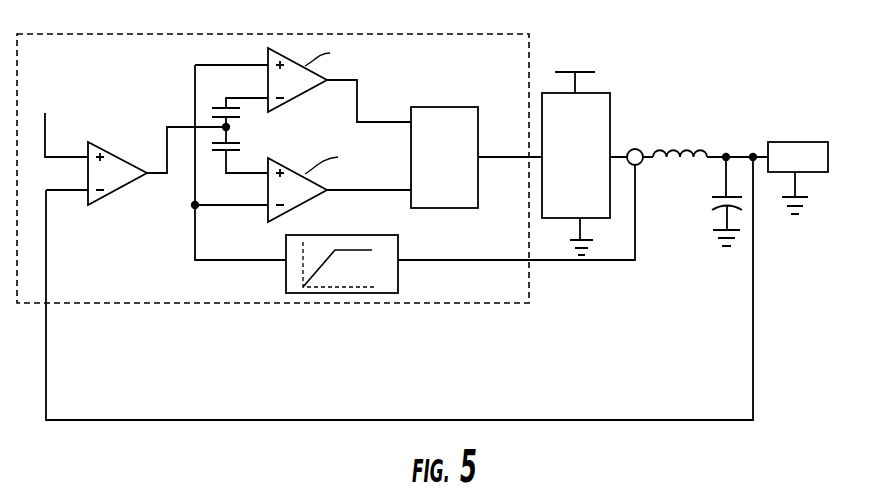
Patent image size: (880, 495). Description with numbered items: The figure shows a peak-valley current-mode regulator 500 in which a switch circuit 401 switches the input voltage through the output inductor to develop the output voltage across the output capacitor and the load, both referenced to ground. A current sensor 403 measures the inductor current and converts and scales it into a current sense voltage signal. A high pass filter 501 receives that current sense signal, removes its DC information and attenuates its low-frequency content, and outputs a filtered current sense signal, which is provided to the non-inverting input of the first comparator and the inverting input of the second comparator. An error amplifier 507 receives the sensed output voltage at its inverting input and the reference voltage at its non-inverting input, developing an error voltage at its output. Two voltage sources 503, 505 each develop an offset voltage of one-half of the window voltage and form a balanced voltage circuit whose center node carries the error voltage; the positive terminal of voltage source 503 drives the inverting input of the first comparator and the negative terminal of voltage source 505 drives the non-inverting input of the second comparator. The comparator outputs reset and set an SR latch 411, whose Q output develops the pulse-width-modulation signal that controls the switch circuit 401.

The peak-valley current-mode regulator 500 is at (655, 33).
The switch circuit 401 is at (610, 113).
The current sensor 403 is at (635, 149).
The SR latch 411 is at (445, 107).
The high pass filter 501 is at (347, 235).
The voltage source 503 is at (240, 109).
The voltage source 505 is at (218, 152).
The error amplifier 507 is at (103, 197).